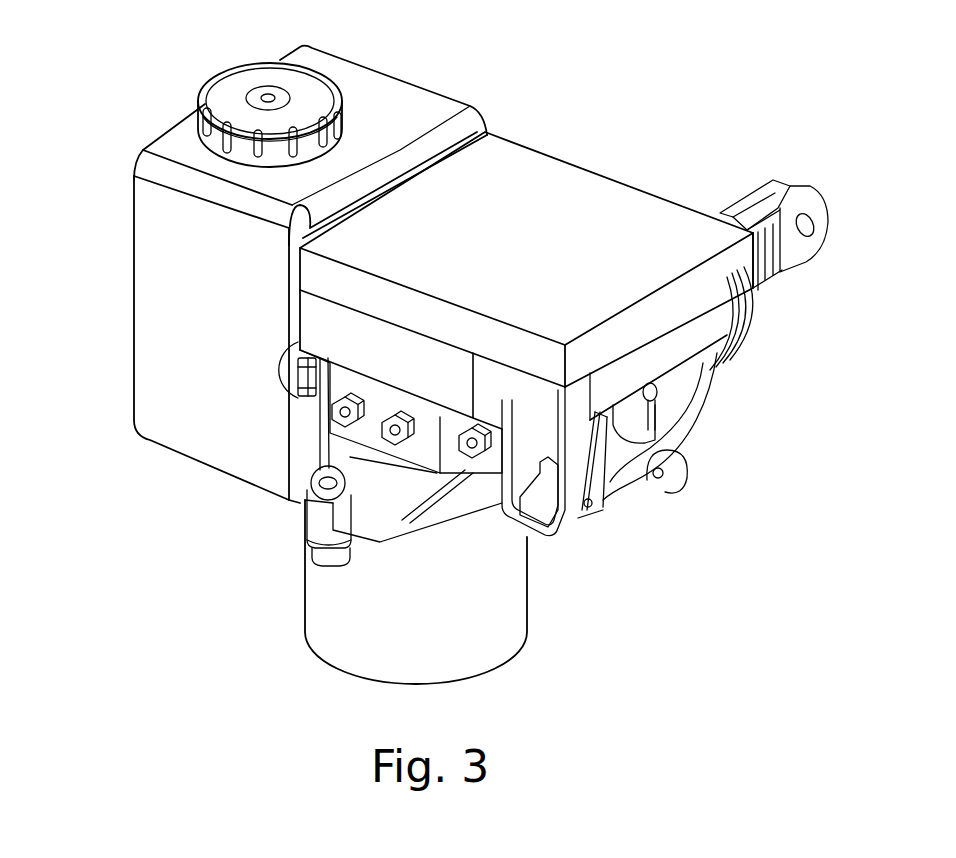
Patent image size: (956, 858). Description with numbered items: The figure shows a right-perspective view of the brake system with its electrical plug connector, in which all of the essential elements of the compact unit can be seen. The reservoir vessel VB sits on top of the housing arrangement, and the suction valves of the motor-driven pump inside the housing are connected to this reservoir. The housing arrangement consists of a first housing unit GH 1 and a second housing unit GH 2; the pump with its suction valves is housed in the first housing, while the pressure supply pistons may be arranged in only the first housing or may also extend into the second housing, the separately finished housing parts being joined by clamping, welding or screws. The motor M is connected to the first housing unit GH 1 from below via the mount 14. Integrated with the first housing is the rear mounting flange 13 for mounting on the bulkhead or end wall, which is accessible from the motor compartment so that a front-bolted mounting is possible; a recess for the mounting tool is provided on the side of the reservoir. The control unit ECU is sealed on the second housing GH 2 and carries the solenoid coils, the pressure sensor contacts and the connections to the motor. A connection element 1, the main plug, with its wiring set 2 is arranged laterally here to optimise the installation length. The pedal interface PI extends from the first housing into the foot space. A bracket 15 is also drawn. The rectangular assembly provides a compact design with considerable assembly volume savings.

The reservoir vessel VB is at (170, 218).
The control unit ECU is at (600, 205).
The wiring set 2 is at (317, 310).
The second housing unit GH 2 is at (300, 372).
The first housing unit GH 1 is at (325, 392).
The mount 14 is at (315, 510).
The motor M is at (335, 612).
The U-shaped bracket 15 is at (473, 455).
The connection element 1 is at (683, 335).
The mounting flange 13 is at (658, 478).
The pedal interface PI is at (740, 318).